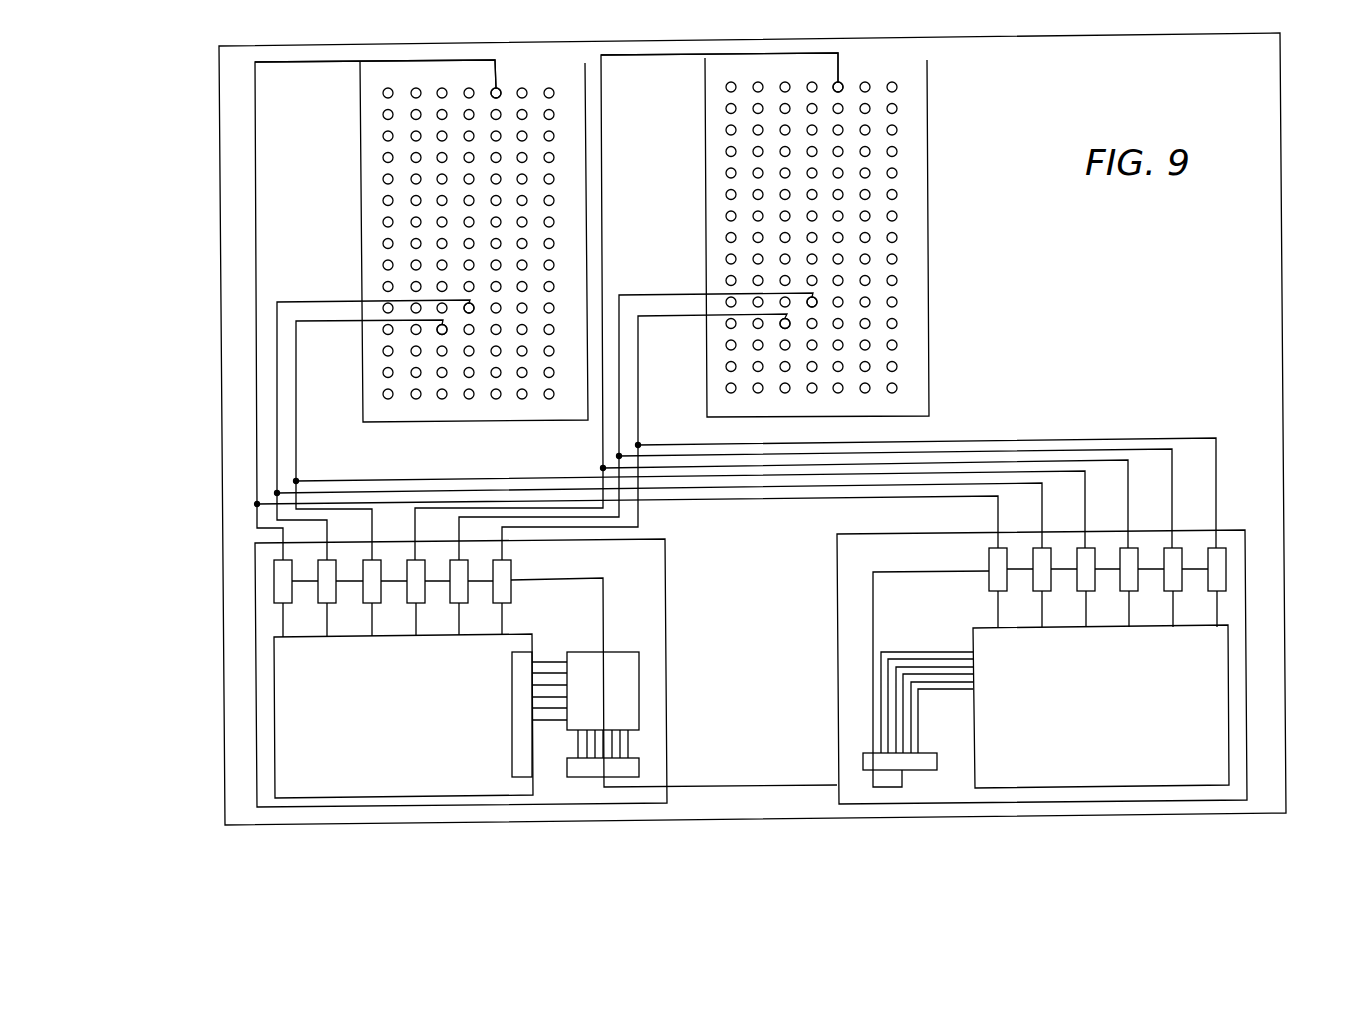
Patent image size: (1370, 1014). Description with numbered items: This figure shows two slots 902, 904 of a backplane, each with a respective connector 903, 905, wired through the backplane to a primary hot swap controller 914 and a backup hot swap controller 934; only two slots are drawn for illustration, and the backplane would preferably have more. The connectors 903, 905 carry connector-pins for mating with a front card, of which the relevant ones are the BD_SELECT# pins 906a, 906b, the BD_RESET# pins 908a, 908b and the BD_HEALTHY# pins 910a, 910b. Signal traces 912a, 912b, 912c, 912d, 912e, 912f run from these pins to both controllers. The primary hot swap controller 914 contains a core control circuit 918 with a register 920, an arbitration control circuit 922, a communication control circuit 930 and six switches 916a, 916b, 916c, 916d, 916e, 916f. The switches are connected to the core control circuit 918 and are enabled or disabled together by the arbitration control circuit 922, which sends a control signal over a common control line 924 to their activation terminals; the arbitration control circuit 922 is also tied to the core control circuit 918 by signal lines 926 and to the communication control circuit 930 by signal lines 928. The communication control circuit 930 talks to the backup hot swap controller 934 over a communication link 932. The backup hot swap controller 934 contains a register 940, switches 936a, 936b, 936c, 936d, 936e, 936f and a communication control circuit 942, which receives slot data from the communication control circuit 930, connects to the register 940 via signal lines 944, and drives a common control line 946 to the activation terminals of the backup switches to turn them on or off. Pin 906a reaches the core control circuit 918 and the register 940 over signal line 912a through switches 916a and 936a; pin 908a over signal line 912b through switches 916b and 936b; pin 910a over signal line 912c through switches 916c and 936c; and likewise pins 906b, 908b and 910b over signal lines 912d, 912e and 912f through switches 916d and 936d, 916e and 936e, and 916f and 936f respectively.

The slot 902 is at (373, 73).
The connector 903 is at (357, 238).
The slot 904 is at (915, 63).
The connector 905 is at (928, 237).
The BD_SELECT# pin 906a is at (501, 91).
The BD_SELECT# pin 906b is at (843, 90).
The BD_RESET# pin 908a is at (474, 305).
The BD_RESET# pin 908b is at (817, 300).
The BD_HEALTHY# pin 910a is at (447, 331).
The BD_HEALTHY# pin 910b is at (790, 325).
The signal line 912a is at (254, 342).
The signal line 912b is at (277, 437).
The signal line 912c is at (297, 448).
The signal line 912d is at (415, 523).
The signal line 912e is at (619, 430).
The signal line 912f is at (648, 510).
The primary hot swap controller 914 is at (265, 712).
The switch 916a is at (274, 583).
The switch 916b is at (327, 603).
The switch 916c is at (372, 603).
The switch 916d is at (416, 603).
The switch 916e is at (459, 603).
The switch 916f is at (512, 567).
The core control circuit 918 is at (303, 783).
The register 920 is at (512, 747).
The arbitration control circuit 922 is at (640, 690).
The common control line 924 is at (603, 617).
The signal lines 926 is at (550, 660).
The signal lines 928 is at (632, 742).
The communication control circuit 930 is at (640, 766).
The communication link 932 is at (749, 787).
The backup hot swap controller 934 is at (1240, 773).
The switch 936a is at (989, 562).
The switch 936b is at (1042, 591).
The switch 936c is at (1086, 591).
The switch 936d is at (1129, 591).
The switch 936e is at (1173, 591).
The switch 936f is at (1226, 569).
The register 940 is at (1228, 703).
The communication control circuit 942 is at (863, 762).
The signal lines 944 is at (925, 650).
The common control line 946 is at (873, 612).